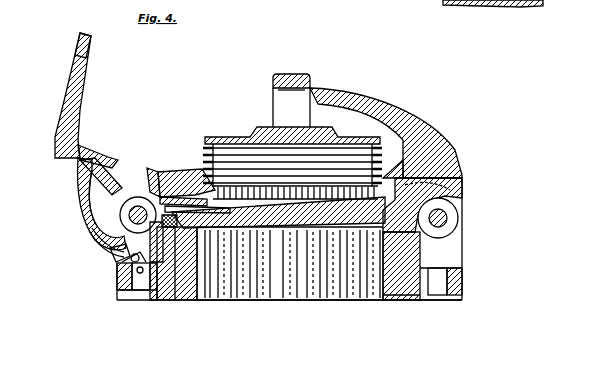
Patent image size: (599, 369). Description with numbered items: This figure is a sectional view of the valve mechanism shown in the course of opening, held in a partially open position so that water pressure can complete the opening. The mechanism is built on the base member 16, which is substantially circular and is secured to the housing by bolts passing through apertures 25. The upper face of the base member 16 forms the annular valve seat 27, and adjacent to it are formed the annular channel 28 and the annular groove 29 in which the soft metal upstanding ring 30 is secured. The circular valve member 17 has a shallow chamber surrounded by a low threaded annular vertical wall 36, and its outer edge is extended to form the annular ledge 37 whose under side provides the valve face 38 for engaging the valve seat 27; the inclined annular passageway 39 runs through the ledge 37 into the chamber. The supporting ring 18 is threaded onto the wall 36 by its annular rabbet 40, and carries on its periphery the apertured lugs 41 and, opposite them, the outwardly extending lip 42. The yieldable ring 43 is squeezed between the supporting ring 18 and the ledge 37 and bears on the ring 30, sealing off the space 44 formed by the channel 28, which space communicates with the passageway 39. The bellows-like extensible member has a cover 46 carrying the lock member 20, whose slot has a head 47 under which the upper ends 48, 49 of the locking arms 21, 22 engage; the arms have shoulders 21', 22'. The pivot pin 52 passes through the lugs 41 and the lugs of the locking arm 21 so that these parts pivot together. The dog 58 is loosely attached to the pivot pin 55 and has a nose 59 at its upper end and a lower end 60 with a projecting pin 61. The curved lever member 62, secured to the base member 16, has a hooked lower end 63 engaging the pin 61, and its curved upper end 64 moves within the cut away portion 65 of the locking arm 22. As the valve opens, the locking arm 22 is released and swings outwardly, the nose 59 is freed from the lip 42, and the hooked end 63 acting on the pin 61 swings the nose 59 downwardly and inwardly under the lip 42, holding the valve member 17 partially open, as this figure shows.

The base member 16 is at (460, 287).
The valve member 17 is at (296, 208).
The supporting ring 18 is at (445, 178).
The lock member 20 is at (280, 102).
The locking arm 21 is at (386, 187).
The shoulder 21' is at (393, 161).
The locking arm 22 is at (60, 95).
The shoulder 22' is at (135, 182).
The aperture 25 is at (143, 290).
The annular valve seat 27 is at (188, 303).
The annular channel 28 is at (167, 300).
The annular groove 29 is at (127, 293).
The upstanding ring 30 is at (158, 300).
The annular vertical wall 36 is at (183, 186).
The annular ledge 37 is at (197, 147).
The valve face 38 is at (206, 303).
The annular passageway 39 is at (217, 232).
The annular rabbet 40 is at (158, 172).
The apertured lugs 41 is at (452, 207).
The lip 42 is at (147, 175).
The ring 43 is at (158, 186).
The space 44 is at (185, 303).
The cover 46 is at (237, 133).
The head 47 is at (282, 73).
The upper end 48 is at (305, 90).
The upper end 49 is at (90, 40).
The pivot pin 52 is at (448, 223).
The pivot pin 55 is at (137, 190).
The dog 58 is at (118, 255).
The nose 59 is at (150, 172).
The lower end 60 is at (131, 259).
The projecting pin 61 is at (127, 270).
The curved lever member 62 is at (85, 213).
The hooked lower end 63 is at (136, 272).
The curved upper end 64 is at (88, 159).
The cut away portion 65 is at (108, 158).